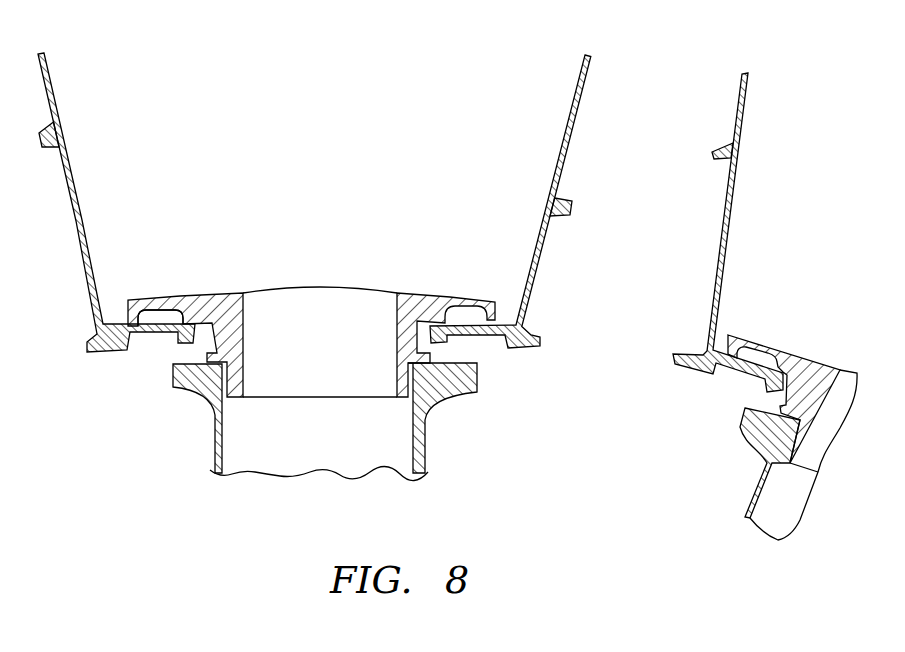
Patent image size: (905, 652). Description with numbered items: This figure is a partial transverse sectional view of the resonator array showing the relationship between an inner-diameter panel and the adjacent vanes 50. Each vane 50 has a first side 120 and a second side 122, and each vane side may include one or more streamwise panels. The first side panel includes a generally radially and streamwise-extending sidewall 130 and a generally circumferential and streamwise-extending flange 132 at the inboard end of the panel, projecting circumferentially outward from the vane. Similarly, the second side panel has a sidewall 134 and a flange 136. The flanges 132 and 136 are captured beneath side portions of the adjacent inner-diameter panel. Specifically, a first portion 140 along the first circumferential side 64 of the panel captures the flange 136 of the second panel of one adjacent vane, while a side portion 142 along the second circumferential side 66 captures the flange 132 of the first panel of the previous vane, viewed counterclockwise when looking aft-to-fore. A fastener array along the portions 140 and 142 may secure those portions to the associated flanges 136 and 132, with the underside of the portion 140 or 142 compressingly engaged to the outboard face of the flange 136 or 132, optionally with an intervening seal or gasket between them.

The vane 50 is at (756, 232).
The first circumferential side 64 is at (319, 310).
The second circumferential side 66 is at (113, 312).
The first side 120 is at (756, 232).
The second side 122 is at (547, 232).
The sidewall 130 is at (756, 232).
The flange 132 is at (712, 338).
The sidewall 134 is at (547, 232).
The flange 136 is at (483, 335).
The first portion 140 is at (458, 296).
The side portion 142 is at (167, 303).